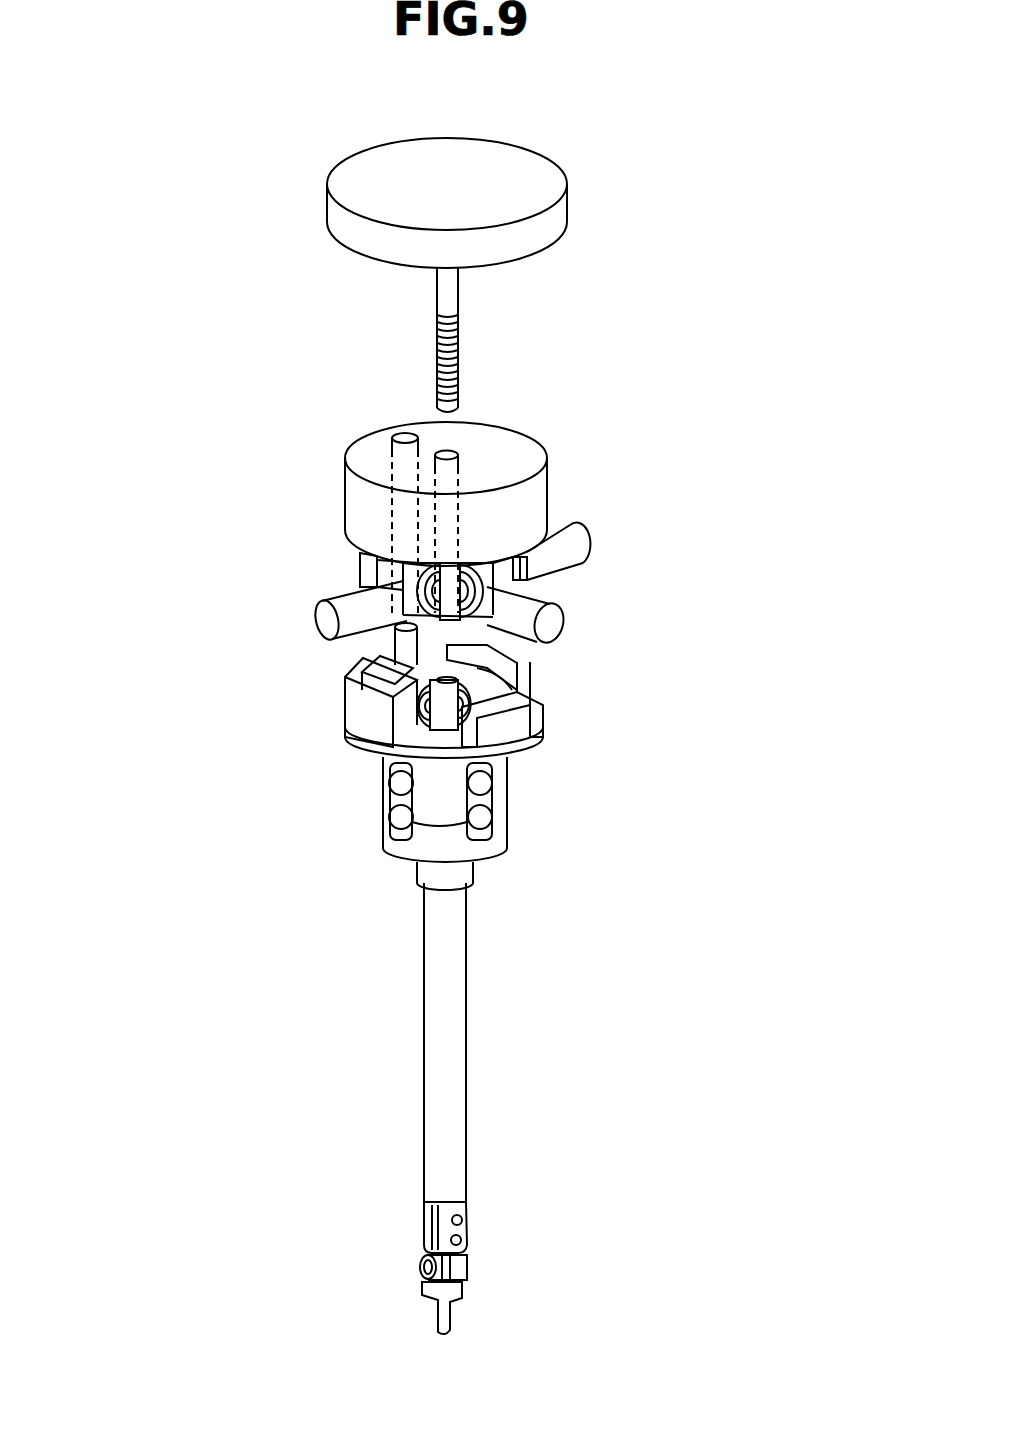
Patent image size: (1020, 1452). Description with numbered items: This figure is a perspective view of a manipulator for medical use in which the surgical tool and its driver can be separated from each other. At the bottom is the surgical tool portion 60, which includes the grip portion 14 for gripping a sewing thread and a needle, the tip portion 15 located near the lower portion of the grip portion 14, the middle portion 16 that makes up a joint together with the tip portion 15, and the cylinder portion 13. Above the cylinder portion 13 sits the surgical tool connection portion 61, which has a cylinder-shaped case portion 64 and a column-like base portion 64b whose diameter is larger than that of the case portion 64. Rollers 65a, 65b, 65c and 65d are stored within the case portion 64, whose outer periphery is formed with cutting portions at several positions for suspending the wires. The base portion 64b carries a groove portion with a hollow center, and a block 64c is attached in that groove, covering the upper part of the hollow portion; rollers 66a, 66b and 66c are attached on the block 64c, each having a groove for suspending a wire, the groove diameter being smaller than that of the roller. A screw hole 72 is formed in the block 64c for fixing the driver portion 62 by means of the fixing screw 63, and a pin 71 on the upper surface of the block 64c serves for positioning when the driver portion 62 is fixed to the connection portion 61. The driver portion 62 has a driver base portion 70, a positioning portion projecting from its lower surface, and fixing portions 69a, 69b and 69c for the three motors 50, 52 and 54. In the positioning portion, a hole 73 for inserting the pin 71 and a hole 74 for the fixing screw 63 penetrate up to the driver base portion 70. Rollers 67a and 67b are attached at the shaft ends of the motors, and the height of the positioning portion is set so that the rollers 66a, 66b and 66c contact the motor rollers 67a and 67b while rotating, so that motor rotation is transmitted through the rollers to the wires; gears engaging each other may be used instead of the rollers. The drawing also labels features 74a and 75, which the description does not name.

The cylinder portion 13 is at (440, 945).
The grip portion 14 is at (457, 1313).
The tip portion 15 is at (463, 1252).
The middle portion 16 is at (460, 1223).
The motor 50 is at (568, 552).
The motor 52 is at (312, 608).
The motor 54 is at (520, 610).
The surgical tool portion 60 is at (208, 945).
The surgical tool connection portion 61 is at (207, 598).
The driver portion 62 is at (200, 332).
The fixing screw 63 is at (340, 221).
The case portion 64 is at (452, 847).
The base portion 64b is at (368, 738).
The block 64c is at (392, 655).
The roller 65a is at (395, 808).
The roller 65b is at (392, 767).
The roller 65c is at (488, 815).
The roller 65d is at (485, 773).
The roller 66a is at (395, 702).
The roller 66b is at (530, 718).
The roller 66c is at (530, 658).
The roller 67a is at (420, 558).
The roller 67b is at (540, 592).
The fixing portion 69a is at (380, 573).
The fixing portion 69b is at (520, 555).
The fixing portion 69c is at (592, 537).
The driver base portion 70 is at (498, 433).
The pin 71 is at (390, 640).
The screw hole 72 is at (400, 688).
The hole 73 is at (398, 437).
The hole 74 is at (458, 452).
The hole 74a is at (462, 677).
The threaded stem 75 is at (460, 348).